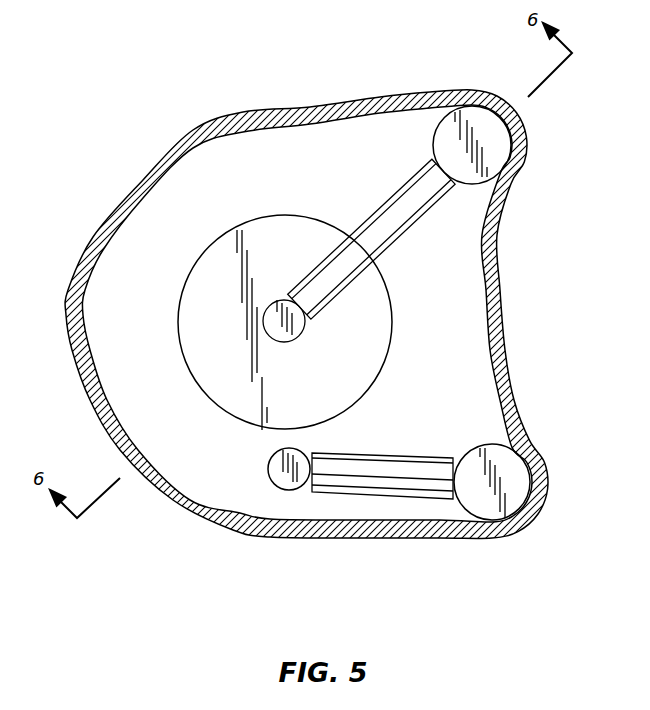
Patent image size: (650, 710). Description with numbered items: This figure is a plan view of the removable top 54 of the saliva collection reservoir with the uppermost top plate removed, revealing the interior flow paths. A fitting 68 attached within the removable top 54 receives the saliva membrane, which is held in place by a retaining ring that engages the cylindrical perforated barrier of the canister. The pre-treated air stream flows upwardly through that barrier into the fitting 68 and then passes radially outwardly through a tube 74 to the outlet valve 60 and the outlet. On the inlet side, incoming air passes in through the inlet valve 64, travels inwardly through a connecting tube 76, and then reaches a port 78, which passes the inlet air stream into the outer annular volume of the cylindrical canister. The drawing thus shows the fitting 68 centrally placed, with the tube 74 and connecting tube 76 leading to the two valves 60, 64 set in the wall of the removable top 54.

The removable top 54 is at (423, 538).
The outlet valve 60 is at (484, 146).
The inlet valve 64 is at (507, 497).
The fitting 68 is at (238, 329).
The tube 74 is at (387, 247).
The connecting tube 76 is at (347, 468).
The port 78 is at (285, 464).